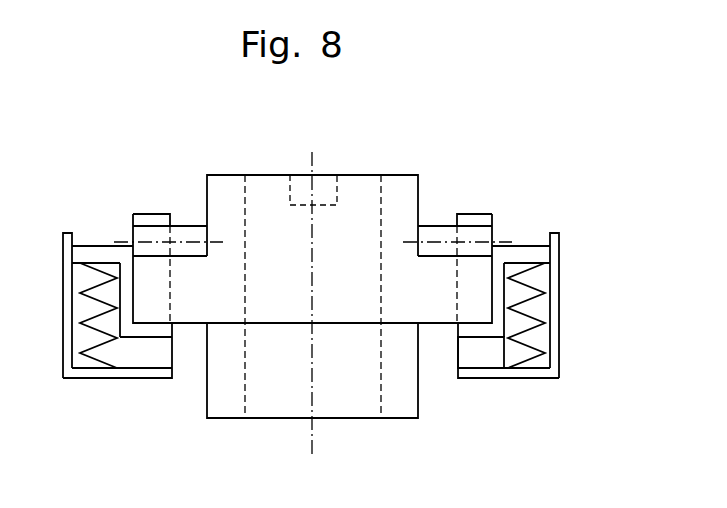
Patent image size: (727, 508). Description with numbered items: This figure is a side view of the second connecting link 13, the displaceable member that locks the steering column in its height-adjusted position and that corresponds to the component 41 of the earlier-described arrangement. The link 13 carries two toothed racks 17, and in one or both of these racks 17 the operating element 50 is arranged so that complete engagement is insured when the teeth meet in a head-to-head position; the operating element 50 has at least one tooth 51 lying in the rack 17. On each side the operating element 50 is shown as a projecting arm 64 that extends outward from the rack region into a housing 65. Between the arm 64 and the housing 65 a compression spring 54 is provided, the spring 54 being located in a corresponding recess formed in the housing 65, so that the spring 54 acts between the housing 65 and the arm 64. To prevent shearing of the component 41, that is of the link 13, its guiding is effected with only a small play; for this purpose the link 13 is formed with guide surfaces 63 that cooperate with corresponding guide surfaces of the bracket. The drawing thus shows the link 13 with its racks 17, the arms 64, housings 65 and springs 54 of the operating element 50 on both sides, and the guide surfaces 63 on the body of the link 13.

The second connecting link 13 is at (191, 399).
The toothed racks 17 is at (192, 232).
The component 41 is at (445, 305).
The operating element 50 is at (485, 356).
The tooth 51 is at (147, 214).
The compression spring 54 is at (110, 342).
The guide surfaces 63 is at (430, 194).
The projecting arm 64 is at (93, 243).
The housing 65 is at (68, 353).